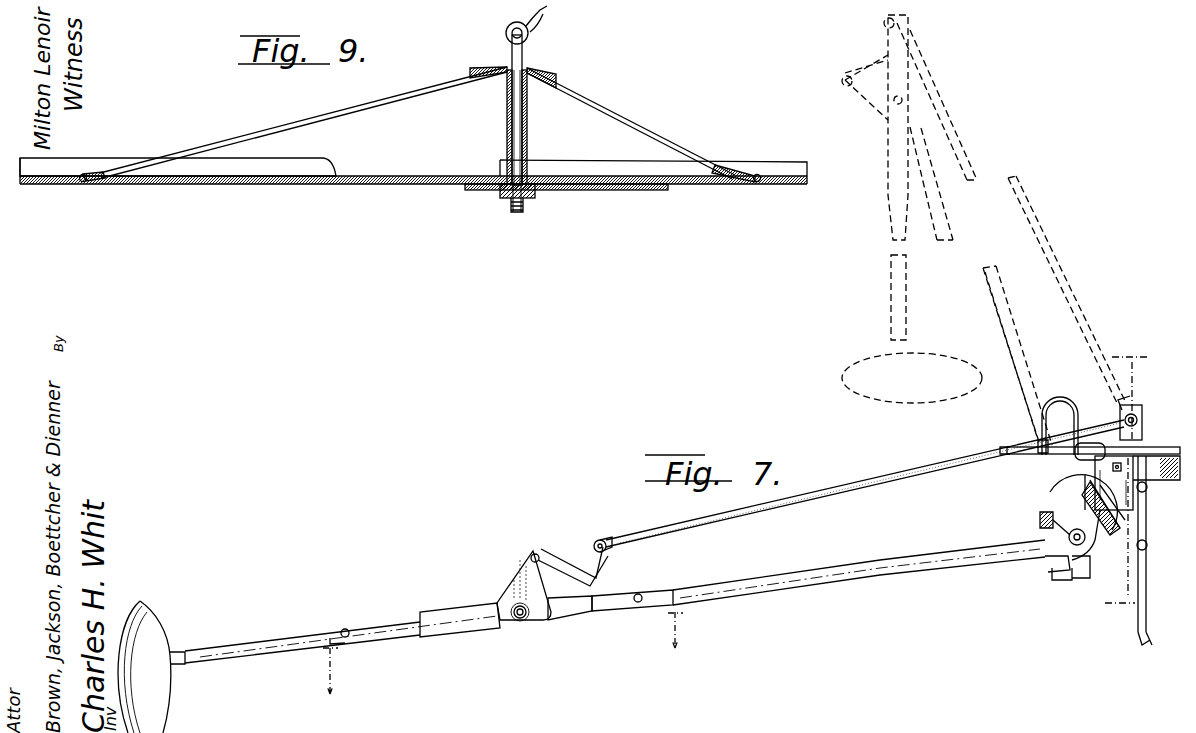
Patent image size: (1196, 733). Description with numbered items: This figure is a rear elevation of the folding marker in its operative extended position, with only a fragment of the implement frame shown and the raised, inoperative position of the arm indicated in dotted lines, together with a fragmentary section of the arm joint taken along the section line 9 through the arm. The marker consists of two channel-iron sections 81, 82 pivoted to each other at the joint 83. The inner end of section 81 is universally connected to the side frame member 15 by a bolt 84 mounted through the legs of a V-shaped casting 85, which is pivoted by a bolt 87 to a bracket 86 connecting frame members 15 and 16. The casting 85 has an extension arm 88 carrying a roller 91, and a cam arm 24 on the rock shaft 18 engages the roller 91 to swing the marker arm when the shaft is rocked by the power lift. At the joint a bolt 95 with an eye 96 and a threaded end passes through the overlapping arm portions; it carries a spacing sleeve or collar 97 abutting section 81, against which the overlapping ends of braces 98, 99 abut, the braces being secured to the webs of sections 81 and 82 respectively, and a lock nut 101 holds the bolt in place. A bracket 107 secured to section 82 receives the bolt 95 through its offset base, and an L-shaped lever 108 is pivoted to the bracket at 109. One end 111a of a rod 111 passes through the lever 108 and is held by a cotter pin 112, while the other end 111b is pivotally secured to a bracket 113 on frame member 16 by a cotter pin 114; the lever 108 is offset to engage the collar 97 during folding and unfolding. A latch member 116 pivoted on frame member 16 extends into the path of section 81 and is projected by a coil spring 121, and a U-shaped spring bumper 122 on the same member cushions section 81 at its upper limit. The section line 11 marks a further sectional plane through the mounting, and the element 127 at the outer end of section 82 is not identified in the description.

In FIG. 7, the section line 9 is at (500, 654).
In FIG. 7, the section line 11 is at (1126, 477).
In FIG. 7, the side frame member 15 is at (1053, 578).
In FIG. 7, the frame member 16 is at (1172, 450).
In FIG. 7, the rock shaft 18 is at (1152, 478).
In FIG. 7, the cam arm 24 is at (1138, 522).
In FIG. 9, the marker arm section 81 is at (720, 186).
In FIG. 7, the marker arm section 81 is at (820, 582).
In FIG. 9, the marker arm section 82 is at (153, 186).
In FIG. 7, the marker arm section 82 is at (273, 660).
In FIG. 9, the pivotal connection 83 is at (516, 222).
In FIG. 7, the pivotal connection 83 is at (516, 620).
In FIG. 7, the bolt 84 is at (1040, 518).
In FIG. 7, the V-shaped casting 85 is at (1046, 566).
In FIG. 7, the bracket 86 is at (1076, 590).
In FIG. 7, the bolt 87 is at (1068, 537).
In FIG. 7, the extension arm 88 is at (1080, 578).
In FIG. 7, the roller 91 is at (1062, 490).
In FIG. 9, the bolt 95 is at (516, 115).
In FIG. 7, the bolt 95 is at (514, 609).
In FIG. 9, the eye 96 is at (510, 58).
In FIG. 9, the spacing sleeve 97 is at (508, 95).
In FIG. 9, the brace 98 is at (556, 84).
In FIG. 9, the brace 99 is at (384, 98).
In FIG. 9, the lock nut 101 is at (505, 192).
In FIG. 7, the lock nut 101 is at (527, 617).
In FIG. 7, the bracket 107 is at (512, 572).
In FIG. 7, the L-shaped lever 108 is at (575, 550).
In FIG. 7, the pivot 109 is at (499, 604).
In FIG. 7, the rod 111 is at (748, 522).
In FIG. 7, the rod end 111a is at (612, 545).
In FIG. 7, the rod end 111b is at (1127, 406).
In FIG. 7, the cotter pin 112 is at (603, 540).
In FIG. 7, the bracket 113 is at (1141, 432).
In FIG. 7, the cotter pin 114 is at (1135, 413).
In FIG. 7, the latch member 116 is at (1035, 455).
In FIG. 7, the coil spring 121 is at (1076, 420).
In FIG. 7, the spring bumper 122 is at (1040, 424).
In FIG. 7, the reflector dish 127 is at (154, 654).